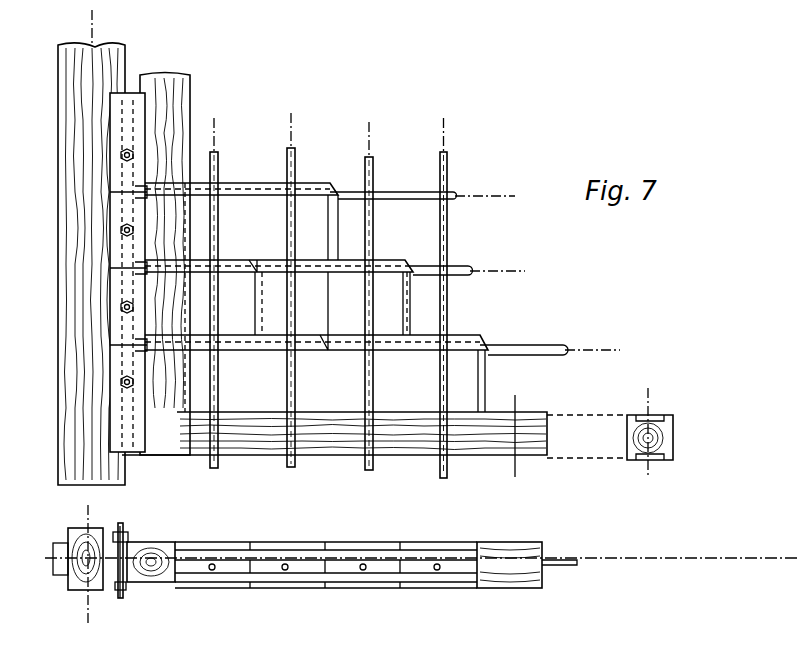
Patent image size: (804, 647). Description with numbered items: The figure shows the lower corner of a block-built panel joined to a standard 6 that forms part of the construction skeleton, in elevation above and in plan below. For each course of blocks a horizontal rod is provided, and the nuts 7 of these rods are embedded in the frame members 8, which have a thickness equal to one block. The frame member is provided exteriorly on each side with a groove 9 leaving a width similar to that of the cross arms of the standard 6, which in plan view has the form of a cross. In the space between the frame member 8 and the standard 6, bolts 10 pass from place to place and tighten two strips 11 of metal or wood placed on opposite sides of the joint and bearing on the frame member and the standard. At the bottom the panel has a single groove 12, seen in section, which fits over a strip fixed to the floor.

The standard 6 is at (127, 48).
The nut 7 is at (187, 150).
The frame member 8 is at (168, 75).
The groove 9 is at (145, 541).
The bolt 10 is at (150, 522).
The strip 11 is at (170, 58).
The groove 12 is at (655, 457).